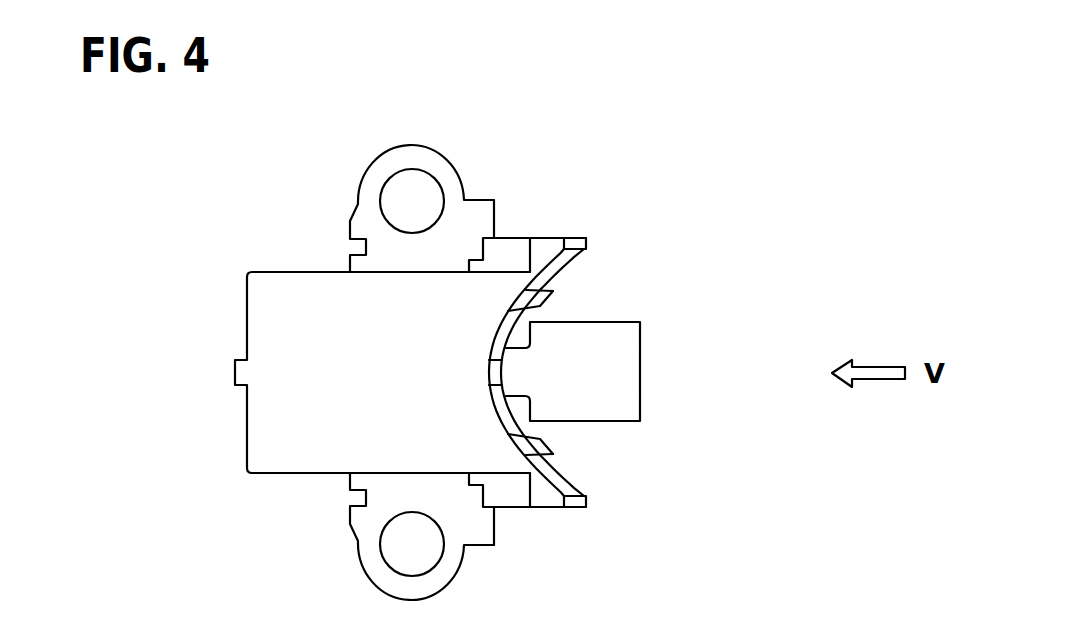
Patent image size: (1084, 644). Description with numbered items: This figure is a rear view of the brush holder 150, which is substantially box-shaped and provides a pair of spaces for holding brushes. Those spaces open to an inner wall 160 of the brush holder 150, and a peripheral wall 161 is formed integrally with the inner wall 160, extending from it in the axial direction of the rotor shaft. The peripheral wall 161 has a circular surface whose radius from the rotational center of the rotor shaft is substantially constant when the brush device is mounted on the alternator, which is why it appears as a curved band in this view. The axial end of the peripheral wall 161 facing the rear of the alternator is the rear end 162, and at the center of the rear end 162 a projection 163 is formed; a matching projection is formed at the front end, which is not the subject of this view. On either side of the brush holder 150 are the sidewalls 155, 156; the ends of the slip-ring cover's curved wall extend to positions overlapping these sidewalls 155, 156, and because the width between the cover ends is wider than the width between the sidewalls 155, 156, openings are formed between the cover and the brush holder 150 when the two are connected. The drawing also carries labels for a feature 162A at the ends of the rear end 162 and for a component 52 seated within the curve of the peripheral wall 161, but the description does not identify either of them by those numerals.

The brush holder 150 is at (653, 320).
The sidewall 155 is at (447, 476).
The sidewall 156 is at (443, 272).
The inner wall 160 is at (546, 301).
The peripheral wall 161 is at (548, 268).
The rear end of the peripheral wall 162 is at (541, 268).
The band end tab 162A is at (584, 246).
The projection 163 is at (504, 373).
The brush 52 is at (627, 382).